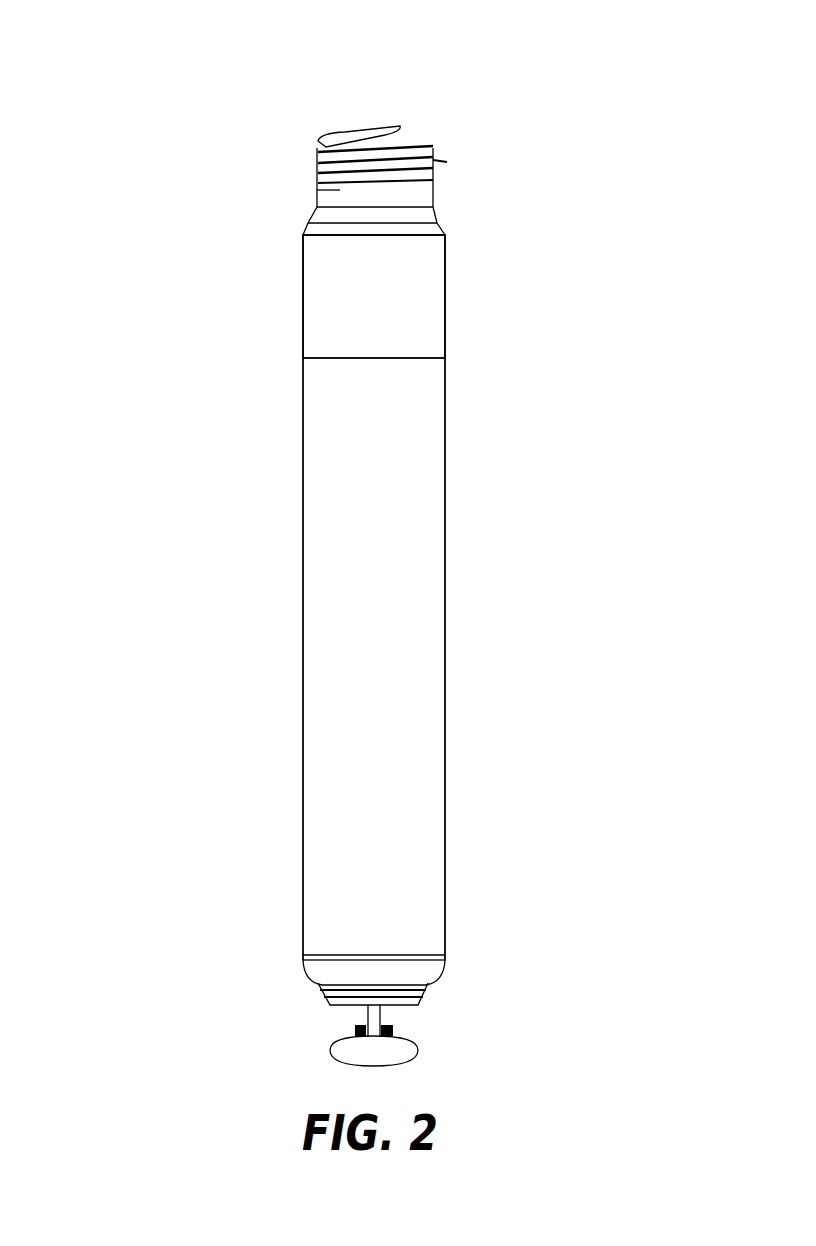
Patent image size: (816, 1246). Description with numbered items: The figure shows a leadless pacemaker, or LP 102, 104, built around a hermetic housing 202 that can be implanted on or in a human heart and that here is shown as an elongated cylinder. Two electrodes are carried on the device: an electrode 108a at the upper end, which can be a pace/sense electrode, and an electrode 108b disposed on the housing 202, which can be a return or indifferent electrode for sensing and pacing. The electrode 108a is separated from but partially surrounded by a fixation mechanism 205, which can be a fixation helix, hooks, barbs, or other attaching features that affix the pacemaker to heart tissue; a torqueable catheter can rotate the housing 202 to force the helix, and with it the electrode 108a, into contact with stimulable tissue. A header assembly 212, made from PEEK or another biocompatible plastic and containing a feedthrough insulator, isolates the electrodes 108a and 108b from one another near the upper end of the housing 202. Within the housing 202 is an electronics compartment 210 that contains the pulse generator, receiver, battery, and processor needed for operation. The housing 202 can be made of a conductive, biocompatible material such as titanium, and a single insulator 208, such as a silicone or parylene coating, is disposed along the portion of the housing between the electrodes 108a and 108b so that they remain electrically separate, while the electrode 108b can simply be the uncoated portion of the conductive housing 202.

The leadless pacemaker (LP) 102 is at (436, 534).
The leadless pacemaker (LP) 104 is at (374, 597).
The electrode 108a is at (365, 98).
The electrode 108b is at (393, 592).
The hermetic housing 202 is at (478, 401).
The fixation mechanism 205 is at (318, 92).
The insulator 208 is at (423, 290).
The electronics compartment 210 is at (326, 277).
The header assembly 212 is at (437, 211).